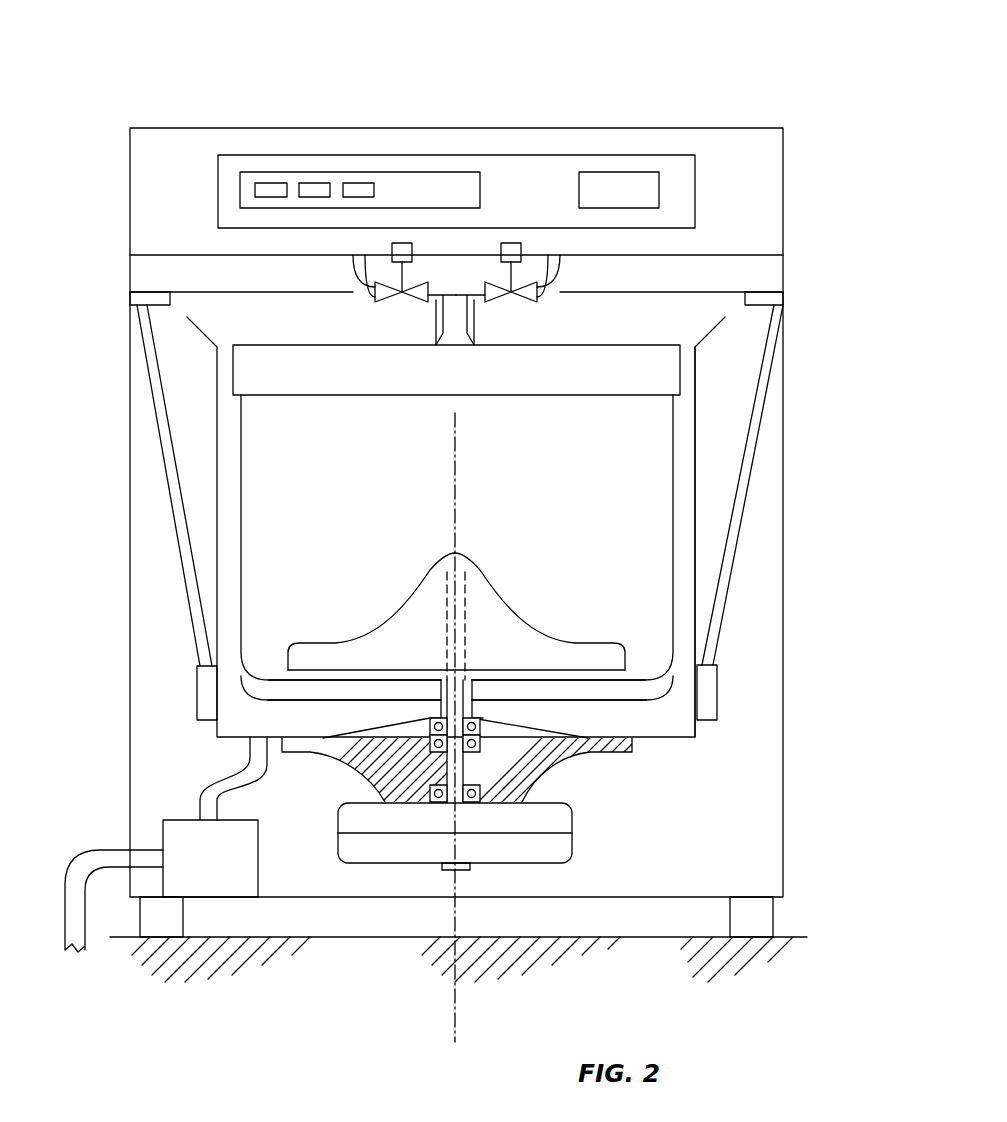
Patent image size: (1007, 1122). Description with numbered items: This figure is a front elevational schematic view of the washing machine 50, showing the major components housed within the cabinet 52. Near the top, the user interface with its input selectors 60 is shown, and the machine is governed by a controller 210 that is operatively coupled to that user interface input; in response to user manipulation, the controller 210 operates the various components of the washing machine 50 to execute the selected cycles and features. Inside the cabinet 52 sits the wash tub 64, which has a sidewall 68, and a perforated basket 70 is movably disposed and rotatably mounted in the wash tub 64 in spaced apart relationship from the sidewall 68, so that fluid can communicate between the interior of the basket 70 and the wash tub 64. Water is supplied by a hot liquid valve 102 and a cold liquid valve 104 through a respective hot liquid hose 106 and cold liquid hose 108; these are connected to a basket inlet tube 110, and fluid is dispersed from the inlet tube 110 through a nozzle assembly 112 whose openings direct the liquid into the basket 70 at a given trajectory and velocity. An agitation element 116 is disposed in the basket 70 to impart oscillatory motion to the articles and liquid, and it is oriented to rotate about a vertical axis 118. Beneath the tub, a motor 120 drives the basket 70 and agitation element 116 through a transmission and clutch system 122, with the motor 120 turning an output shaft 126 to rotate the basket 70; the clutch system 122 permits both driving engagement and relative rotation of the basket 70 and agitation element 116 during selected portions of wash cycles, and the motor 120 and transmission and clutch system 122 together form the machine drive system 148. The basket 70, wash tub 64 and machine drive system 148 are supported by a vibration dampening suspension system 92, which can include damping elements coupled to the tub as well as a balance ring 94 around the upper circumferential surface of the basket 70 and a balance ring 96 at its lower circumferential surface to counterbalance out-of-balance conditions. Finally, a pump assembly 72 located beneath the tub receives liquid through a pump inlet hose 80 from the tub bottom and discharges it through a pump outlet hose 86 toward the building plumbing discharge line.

The washing machine 50 is at (166, 78).
The cabinet 52 is at (785, 473).
The input selectors 60 is at (213, 723).
The wash tub 64 is at (217, 453).
The sidewall 68 is at (695, 535).
The basket 70 is at (241, 497).
The pump assembly 72 is at (182, 840).
The pump inlet hose 80 is at (210, 783).
The pump outlet hose 86 is at (72, 873).
The vibration dampening suspension system 92 is at (148, 378).
The balance ring 94 is at (282, 362).
The balance ring 96 is at (660, 688).
The hot liquid valve 102 is at (402, 243).
The cold liquid valve 104 is at (511, 243).
The hot liquid hose 106 is at (353, 267).
The cold liquid hose 108 is at (560, 277).
The basket inlet tube 110 is at (477, 345).
The nozzle assembly 112 is at (437, 345).
The agitation element 116 is at (513, 577).
The vertical axis 118 is at (457, 497).
The motor 120 is at (560, 852).
The transmission and clutch system 122 is at (557, 818).
The output shaft 126 is at (452, 767).
The machine drive system 148 is at (539, 805).
The controller 210 is at (680, 177).